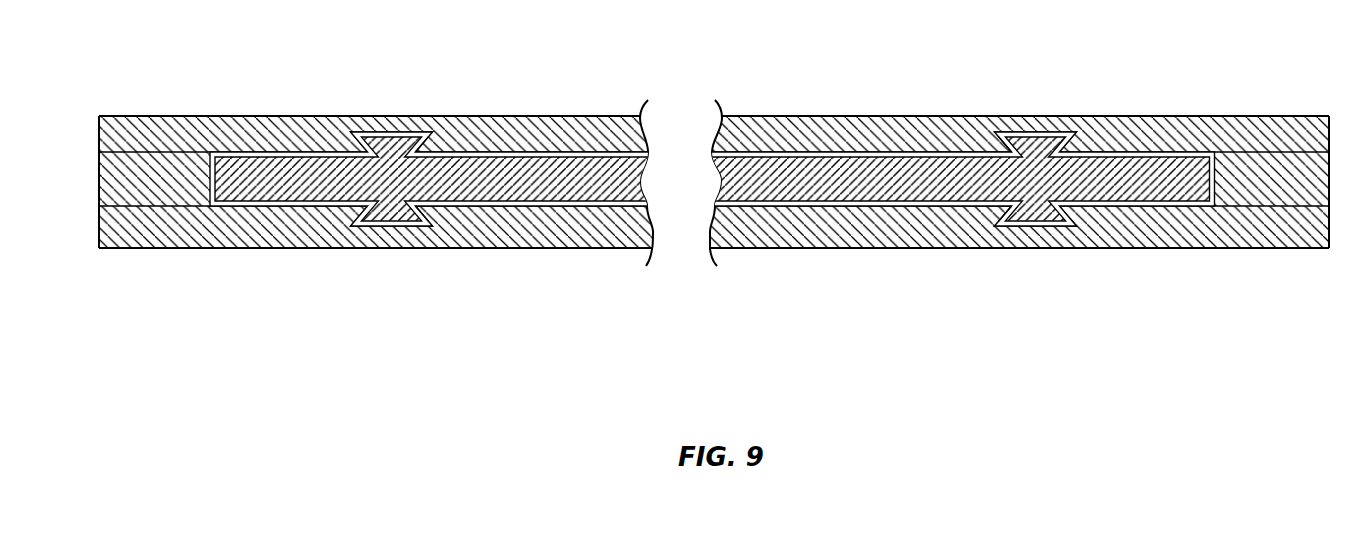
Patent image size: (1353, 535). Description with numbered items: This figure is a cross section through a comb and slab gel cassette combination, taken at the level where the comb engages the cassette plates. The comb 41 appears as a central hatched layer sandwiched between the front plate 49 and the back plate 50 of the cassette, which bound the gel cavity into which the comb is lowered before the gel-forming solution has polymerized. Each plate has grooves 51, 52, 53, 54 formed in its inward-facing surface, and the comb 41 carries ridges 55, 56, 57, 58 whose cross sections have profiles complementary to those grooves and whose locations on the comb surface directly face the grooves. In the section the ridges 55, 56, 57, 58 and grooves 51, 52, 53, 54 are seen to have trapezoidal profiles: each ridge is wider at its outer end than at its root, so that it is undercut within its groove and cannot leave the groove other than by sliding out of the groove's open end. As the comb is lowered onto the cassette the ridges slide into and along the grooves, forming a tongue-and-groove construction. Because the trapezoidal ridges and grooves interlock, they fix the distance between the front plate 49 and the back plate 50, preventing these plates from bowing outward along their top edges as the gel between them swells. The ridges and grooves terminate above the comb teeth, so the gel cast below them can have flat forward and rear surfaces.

The comb 41 is at (284, 172).
The front plate 49 is at (808, 240).
The back plate 50 is at (808, 132).
The groove 51 is at (403, 132).
The groove 52 is at (1040, 134).
The groove 53 is at (402, 228).
The groove 54 is at (1037, 228).
The ridge 55 is at (399, 148).
The ridge 56 is at (1032, 148).
The ridge 57 is at (398, 212).
The ridge 58 is at (1043, 213).